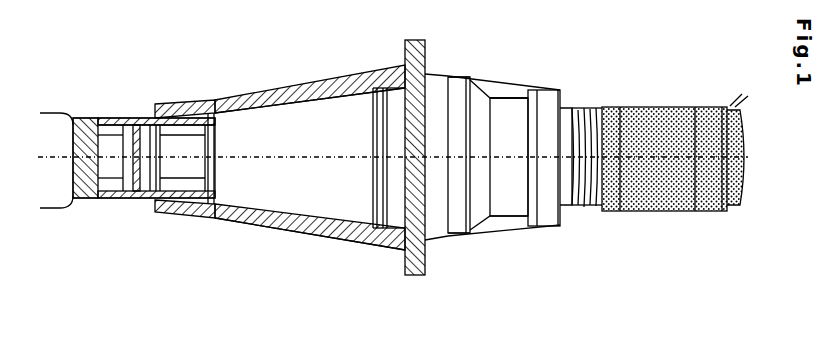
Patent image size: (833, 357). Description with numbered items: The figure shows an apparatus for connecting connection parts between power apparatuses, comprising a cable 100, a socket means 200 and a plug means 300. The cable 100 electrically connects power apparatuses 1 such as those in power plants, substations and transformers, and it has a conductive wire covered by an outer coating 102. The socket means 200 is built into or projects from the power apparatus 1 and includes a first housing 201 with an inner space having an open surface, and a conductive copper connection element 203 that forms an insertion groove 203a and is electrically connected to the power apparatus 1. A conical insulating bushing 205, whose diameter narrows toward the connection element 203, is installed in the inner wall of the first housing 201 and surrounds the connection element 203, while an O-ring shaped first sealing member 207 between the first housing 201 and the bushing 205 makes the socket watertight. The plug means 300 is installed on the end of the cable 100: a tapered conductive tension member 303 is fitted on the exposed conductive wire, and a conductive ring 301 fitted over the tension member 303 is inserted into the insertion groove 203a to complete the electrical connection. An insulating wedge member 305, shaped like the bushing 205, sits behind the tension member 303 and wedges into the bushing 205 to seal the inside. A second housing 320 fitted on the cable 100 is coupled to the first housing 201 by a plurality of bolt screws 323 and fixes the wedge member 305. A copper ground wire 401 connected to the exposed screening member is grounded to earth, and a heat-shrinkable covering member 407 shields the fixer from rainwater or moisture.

The power apparatus 1 is at (62, 206).
The cable 100 is at (660, 183).
The outer coating 102 is at (577, 211).
The socket means 200 is at (216, 224).
The first housing 201 is at (428, 258).
The connection element 203 is at (128, 118).
The insertion groove 203a is at (180, 112).
The bushing 205 is at (296, 233).
The first sealing member 207 is at (404, 246).
The plug means 300 is at (516, 72).
The conductive ring 301 is at (153, 197).
The tension member 303 is at (110, 200).
The wedge member 305 is at (291, 94).
The second housing 320 is at (522, 92).
The bolt screw 323 is at (451, 80).
The ground wire 401 is at (741, 107).
The covering member 407 is at (665, 108).